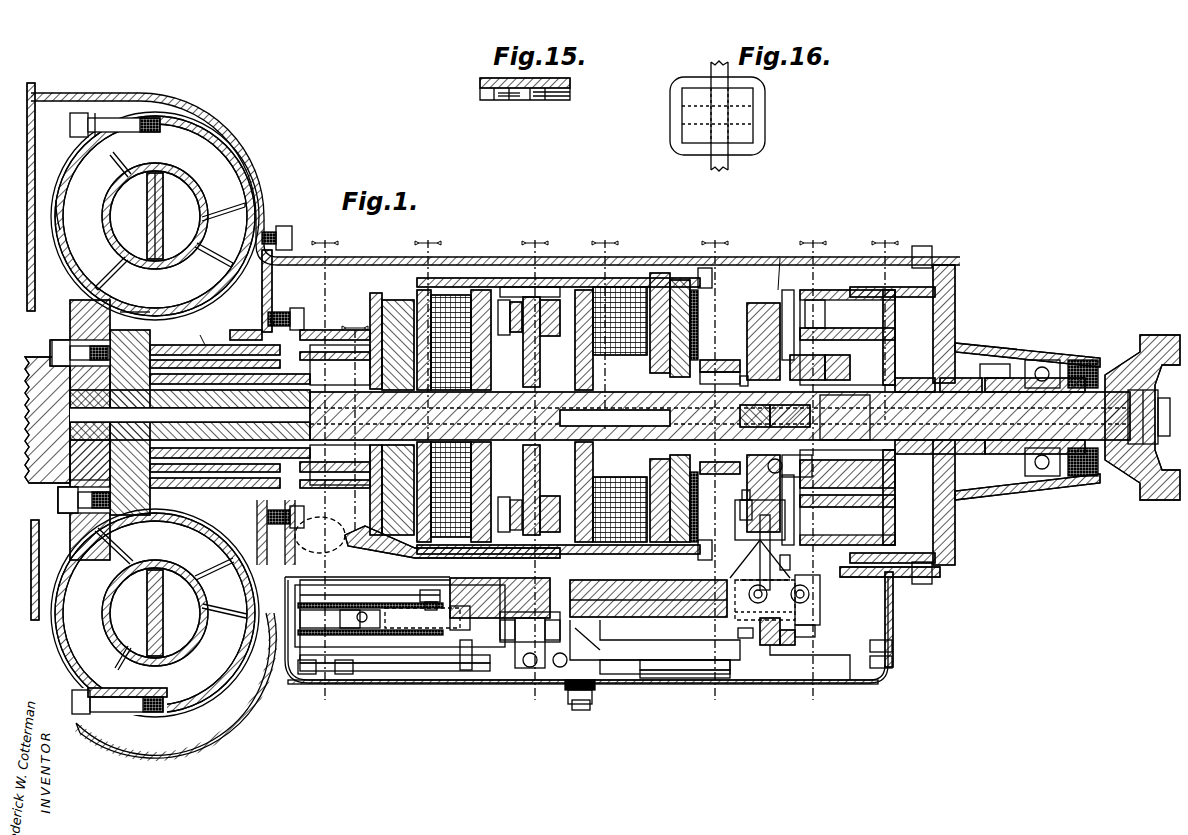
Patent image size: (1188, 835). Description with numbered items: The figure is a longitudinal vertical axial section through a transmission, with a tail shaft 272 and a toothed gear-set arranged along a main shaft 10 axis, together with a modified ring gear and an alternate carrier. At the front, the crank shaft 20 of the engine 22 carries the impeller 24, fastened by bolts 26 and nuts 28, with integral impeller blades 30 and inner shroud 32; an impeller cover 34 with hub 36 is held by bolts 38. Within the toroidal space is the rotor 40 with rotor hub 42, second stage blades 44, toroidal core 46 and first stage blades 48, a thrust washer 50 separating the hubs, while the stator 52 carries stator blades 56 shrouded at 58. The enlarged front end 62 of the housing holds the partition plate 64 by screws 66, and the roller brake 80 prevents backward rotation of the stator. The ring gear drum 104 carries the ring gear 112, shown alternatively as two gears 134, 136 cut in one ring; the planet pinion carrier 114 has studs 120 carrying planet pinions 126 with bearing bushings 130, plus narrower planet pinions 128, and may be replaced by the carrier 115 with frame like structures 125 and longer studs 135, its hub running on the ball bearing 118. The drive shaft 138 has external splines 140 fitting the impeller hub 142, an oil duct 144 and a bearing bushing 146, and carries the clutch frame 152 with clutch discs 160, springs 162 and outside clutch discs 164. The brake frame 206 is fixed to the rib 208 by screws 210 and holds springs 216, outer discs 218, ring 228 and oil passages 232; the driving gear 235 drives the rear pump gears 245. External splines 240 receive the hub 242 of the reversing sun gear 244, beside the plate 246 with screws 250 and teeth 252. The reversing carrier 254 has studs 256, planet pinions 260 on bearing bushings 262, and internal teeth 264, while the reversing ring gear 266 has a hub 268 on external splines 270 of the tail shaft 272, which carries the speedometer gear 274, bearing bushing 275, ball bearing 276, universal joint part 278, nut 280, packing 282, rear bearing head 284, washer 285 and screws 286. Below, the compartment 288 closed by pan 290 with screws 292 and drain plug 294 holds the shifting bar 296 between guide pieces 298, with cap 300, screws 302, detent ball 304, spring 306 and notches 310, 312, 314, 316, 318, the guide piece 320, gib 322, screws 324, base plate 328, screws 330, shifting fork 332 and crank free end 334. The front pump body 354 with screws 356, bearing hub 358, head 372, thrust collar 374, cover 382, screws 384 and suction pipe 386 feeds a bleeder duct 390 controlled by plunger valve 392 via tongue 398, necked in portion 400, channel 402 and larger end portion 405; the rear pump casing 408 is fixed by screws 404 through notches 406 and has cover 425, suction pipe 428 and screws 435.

In FIG. 1, the main shaft 10 is at (720, 416).
In FIG. 1, the crank shaft 20 is at (73, 310).
In FIG. 1, the engine 22 is at (52, 256).
In FIG. 1, the impeller 24 is at (62, 230).
In FIG. 1, the bolts 26 is at (72, 356).
In FIG. 1, the nuts 28 is at (100, 352).
In FIG. 1, the impeller blades 30 is at (80, 196).
In FIG. 1, the inner shroud 32 is at (108, 216).
In FIG. 1, the impeller cover 34 is at (236, 312).
In FIG. 1, the hub 36 is at (208, 348).
In FIG. 1, the bolts 38 is at (160, 125).
In FIG. 1, the rotor 40 is at (132, 312).
In FIG. 1, the rotor hub 42 is at (141, 422).
In FIG. 1, the second stage blades 44 is at (160, 290).
In FIG. 1, the toroidal core 46 is at (173, 258).
In FIG. 1, the first stage blades 48 is at (190, 160).
In FIG. 1, the thrust washer 50 is at (108, 490).
In FIG. 1, the stator 52 is at (218, 270).
In FIG. 1, the stator blades 56 is at (225, 235).
In FIG. 1, the shroud 58 is at (208, 218).
In FIG. 1, the front end 62 is at (232, 160).
In FIG. 1, the partition plate 64 is at (272, 272).
In FIG. 1, the screws 66 is at (283, 226).
In FIG. 1, the roller brake 80 is at (280, 318).
In FIG. 15, the ring gear drum 104 is at (570, 83).
In FIG. 1, the ring gear drum 104 is at (372, 295).
In FIG. 1, the ring gear 112 is at (516, 287).
In FIG. 1, the planet pinion carrier 114 is at (528, 287).
In FIG. 16, the carrier 115 is at (712, 70).
In FIG. 1, the ball bearing 118 is at (744, 375).
In FIG. 1, the studs 120 is at (523, 415).
In FIG. 16, the frame like structures 125 is at (672, 95).
In FIG. 1, the planet pinions 126 is at (547, 414).
In FIG. 1, the planet pinions 128 is at (508, 416).
In FIG. 1, the bearing bushings 130 is at (542, 320).
In FIG. 15, the gear 134 is at (518, 97).
In FIG. 16, the studs 135 is at (700, 117).
In FIG. 15, the gear 136 is at (546, 99).
In FIG. 1, the drive shaft 138 is at (80, 427).
In FIG. 1, the external splines 140 is at (80, 448).
In FIG. 1, the impeller hub 142 is at (68, 378).
In FIG. 1, the oil duct 144 is at (80, 400).
In FIG. 1, the bearing bushing 146 is at (615, 420).
In FIG. 1, the clutch frame 152 is at (392, 300).
In FIG. 1, the clutch discs 160 is at (400, 545).
In FIG. 1, the springs 162 is at (450, 290).
In FIG. 1, the outside clutch discs 164 is at (418, 278).
In FIG. 1, the brake frame 206 is at (680, 280).
In FIG. 1, the rib 208 is at (696, 290).
In FIG. 1, the screws 210 is at (712, 275).
In FIG. 1, the springs 216 is at (626, 290).
In FIG. 1, the outer discs 218 is at (656, 273).
In FIG. 1, the ring 228 is at (584, 290).
In FIG. 1, the oil passages 232 is at (715, 413).
In FIG. 1, the driving gear 235 is at (722, 372).
In FIG. 1, the external splines 240 is at (789, 416).
In FIG. 1, the hub 242 is at (785, 470).
In FIG. 1, the reversing sun gear 244 is at (910, 374).
In FIG. 1, the rear pump gears 245 is at (755, 414).
In FIG. 1, the plate 246 is at (762, 340).
In FIG. 1, the screws 250 is at (788, 302).
In FIG. 1, the teeth 252 is at (805, 367).
In FIG. 1, the reversing carrier 254 is at (820, 292).
In FIG. 1, the studs 256 is at (860, 333).
In FIG. 1, the planet pinions 260 is at (825, 305).
In FIG. 1, the bearing bushings 262 is at (893, 335).
In FIG. 1, the internal teeth 264 is at (833, 367).
In FIG. 1, the reversing ring gear 266 is at (865, 288).
In FIG. 1, the hub 268 is at (946, 374).
In FIG. 1, the external splines 270 is at (895, 482).
In FIG. 1, the tail shaft 272 is at (975, 380).
In FIG. 1, the speedometer gear 274 is at (990, 378).
In FIG. 1, the bearing bushing 275 is at (845, 417).
In FIG. 1, the ball bearing 276 is at (1042, 362).
In FIG. 1, the universal joint part 278 is at (1120, 372).
In FIG. 1, the nut 280 is at (1150, 430).
In FIG. 1, the packing 282 is at (1085, 362).
In FIG. 1, the rear bearing head 284 is at (975, 350).
In FIG. 1, the washer 285 is at (885, 442).
In FIG. 1, the screws 286 is at (950, 278).
In FIG. 1, the compartment 288 is at (895, 608).
In FIG. 1, the pan 290 is at (893, 648).
In FIG. 1, the screws 292 is at (893, 664).
In FIG. 1, the drain plug 294 is at (590, 706).
In FIG. 1, the shifting bar 296 is at (630, 625).
In FIG. 1, the guide pieces 298 is at (605, 610).
In FIG. 1, the cap 300 is at (585, 645).
In FIG. 1, the screws 302 is at (597, 647).
In FIG. 1, the detent ball 304 is at (552, 666).
In FIG. 1, the spring 306 is at (525, 666).
In FIG. 1, the neutral notch 310 is at (530, 631).
In FIG. 1, the forward notch 312 is at (528, 595).
In FIG. 1, the reverse notch 314 is at (548, 595).
In FIG. 1, the engine braking notch 316 is at (510, 617).
In FIG. 1, the hill lock notch 318 is at (560, 617).
In FIG. 1, the guide piece 320 is at (835, 603).
In FIG. 1, the gib 322 is at (830, 620).
In FIG. 1, the screws 324 is at (830, 640).
In FIG. 1, the base plate 328 is at (765, 605).
In FIG. 1, the screws 330 is at (750, 594).
In FIG. 1, the shifting fork 332 is at (775, 545).
In FIG. 1, the free end 334 is at (836, 655).
In FIG. 1, the body 354 is at (340, 596).
In FIG. 1, the screws 356 is at (430, 590).
In FIG. 1, the bearing hub 358 is at (312, 540).
In FIG. 1, the head 372 is at (345, 674).
In FIG. 1, the thrust collar 374 is at (306, 674).
In FIG. 1, the cover 382 is at (410, 660).
In FIG. 1, the screws 384 is at (410, 668).
In FIG. 1, the suction pipe 386 is at (472, 660).
In FIG. 1, the bleeder duct 390 is at (364, 624).
In FIG. 1, the plunger valve 392 is at (432, 628).
In FIG. 1, the tongue 398 is at (462, 630).
In FIG. 1, the necked in portion 400 is at (348, 630).
In FIG. 1, the channel 402 is at (395, 598).
In FIG. 1, the screws 404 is at (745, 485).
In FIG. 1, the larger end portion 405 is at (330, 617).
In FIG. 1, the notches 406 is at (782, 568).
In FIG. 1, the rear pump casing 408 is at (745, 632).
In FIG. 1, the cover 425 is at (755, 660).
In FIG. 1, the suction pipe 428 is at (575, 670).
In FIG. 1, the screws 435 is at (755, 672).